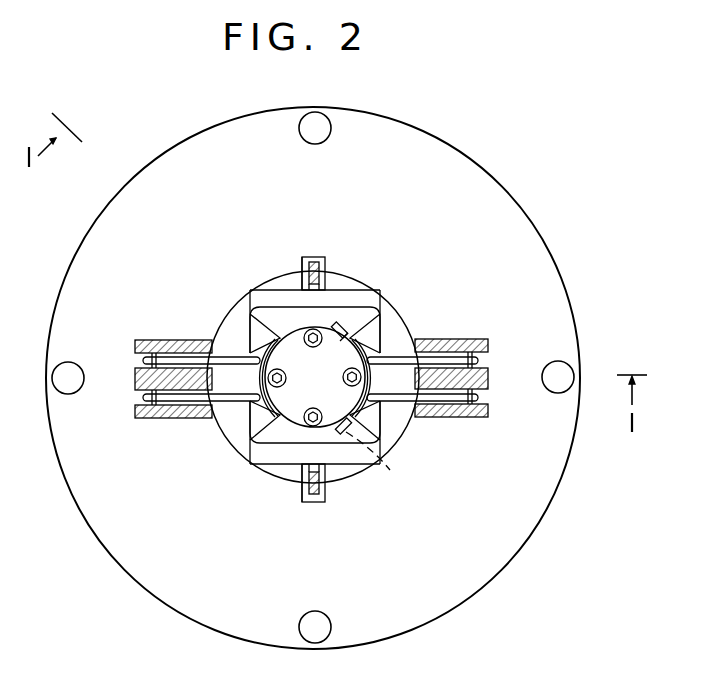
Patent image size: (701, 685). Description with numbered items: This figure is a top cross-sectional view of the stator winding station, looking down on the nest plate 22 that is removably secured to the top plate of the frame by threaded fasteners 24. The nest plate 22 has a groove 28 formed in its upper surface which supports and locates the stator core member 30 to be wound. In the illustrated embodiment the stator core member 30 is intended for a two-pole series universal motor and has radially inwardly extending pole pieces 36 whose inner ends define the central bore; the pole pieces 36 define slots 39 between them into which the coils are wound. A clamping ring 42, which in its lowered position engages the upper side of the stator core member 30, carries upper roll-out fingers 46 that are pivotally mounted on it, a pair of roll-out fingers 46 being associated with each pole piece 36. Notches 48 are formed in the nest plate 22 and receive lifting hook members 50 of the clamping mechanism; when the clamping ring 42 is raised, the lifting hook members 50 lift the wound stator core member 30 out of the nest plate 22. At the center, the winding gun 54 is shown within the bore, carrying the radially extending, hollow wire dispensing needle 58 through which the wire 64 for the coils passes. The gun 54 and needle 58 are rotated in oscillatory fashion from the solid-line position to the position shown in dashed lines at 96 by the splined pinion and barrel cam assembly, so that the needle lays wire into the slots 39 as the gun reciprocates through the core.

The nest plate 22 is at (185, 214).
The threaded fasteners 24 is at (563, 362).
The groove 28 is at (332, 290).
The stator core member 30 is at (404, 292).
The pole pieces 36 is at (251, 388).
The slots 39 is at (270, 328).
The clamping ring 42 is at (486, 340).
The upper roll-out fingers 46 is at (228, 355).
The notches 48 is at (302, 262).
The lifting hook members 50 is at (314, 262).
The winding gun 54 is at (326, 388).
The wire dispensing needle 58 is at (342, 322).
The wire 64 is at (348, 334).
The dashed-line oscillated position 96 is at (386, 460).